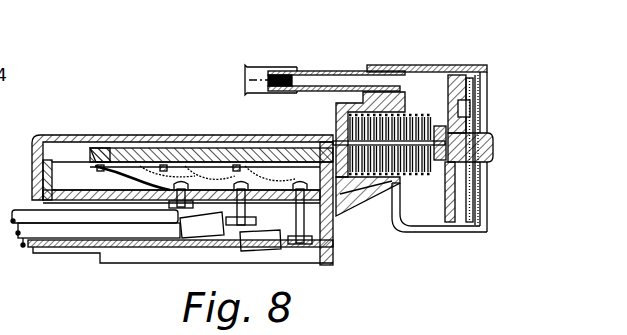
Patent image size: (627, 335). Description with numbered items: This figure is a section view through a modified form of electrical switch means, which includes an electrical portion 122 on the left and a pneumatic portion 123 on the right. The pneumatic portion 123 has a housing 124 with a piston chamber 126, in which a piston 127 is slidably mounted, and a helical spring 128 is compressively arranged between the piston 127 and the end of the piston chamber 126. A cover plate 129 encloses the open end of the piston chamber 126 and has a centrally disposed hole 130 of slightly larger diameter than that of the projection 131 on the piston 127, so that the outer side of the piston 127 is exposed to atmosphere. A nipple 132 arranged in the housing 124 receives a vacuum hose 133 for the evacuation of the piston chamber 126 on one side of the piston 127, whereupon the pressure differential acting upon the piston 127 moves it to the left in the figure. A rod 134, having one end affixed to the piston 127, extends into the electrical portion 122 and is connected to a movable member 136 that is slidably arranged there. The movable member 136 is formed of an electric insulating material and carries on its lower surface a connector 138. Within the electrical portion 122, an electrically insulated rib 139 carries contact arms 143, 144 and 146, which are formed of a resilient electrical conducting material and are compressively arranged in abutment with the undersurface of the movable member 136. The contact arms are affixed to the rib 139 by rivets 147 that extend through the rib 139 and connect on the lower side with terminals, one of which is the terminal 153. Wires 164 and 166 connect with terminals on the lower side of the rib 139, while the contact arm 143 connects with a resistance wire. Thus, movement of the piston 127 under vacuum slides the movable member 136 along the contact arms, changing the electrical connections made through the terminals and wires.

The electrical portion 122 is at (238, 114).
The pneumatic portion 123 is at (428, 47).
The housing 124 is at (397, 218).
The piston chamber 126 is at (432, 210).
The piston 127 is at (462, 98).
The helical spring 128 is at (424, 122).
The cover plate 129 is at (480, 204).
The hole 130 is at (483, 162).
The projection 131 is at (495, 146).
The nipple 132 is at (338, 66).
The vacuum hose 133 is at (281, 50).
The rod 134 is at (334, 140).
The movable member 136 is at (197, 155).
The connector 138 is at (136, 160).
The rib 139 is at (84, 187).
The contact arm 143 is at (110, 172).
The contact arm 144 is at (110, 148).
The contact arm 146 is at (178, 162).
The rivets 147 is at (298, 244).
The terminal 153 is at (113, 205).
The wire 164 is at (152, 233).
The wire 166 is at (208, 244).